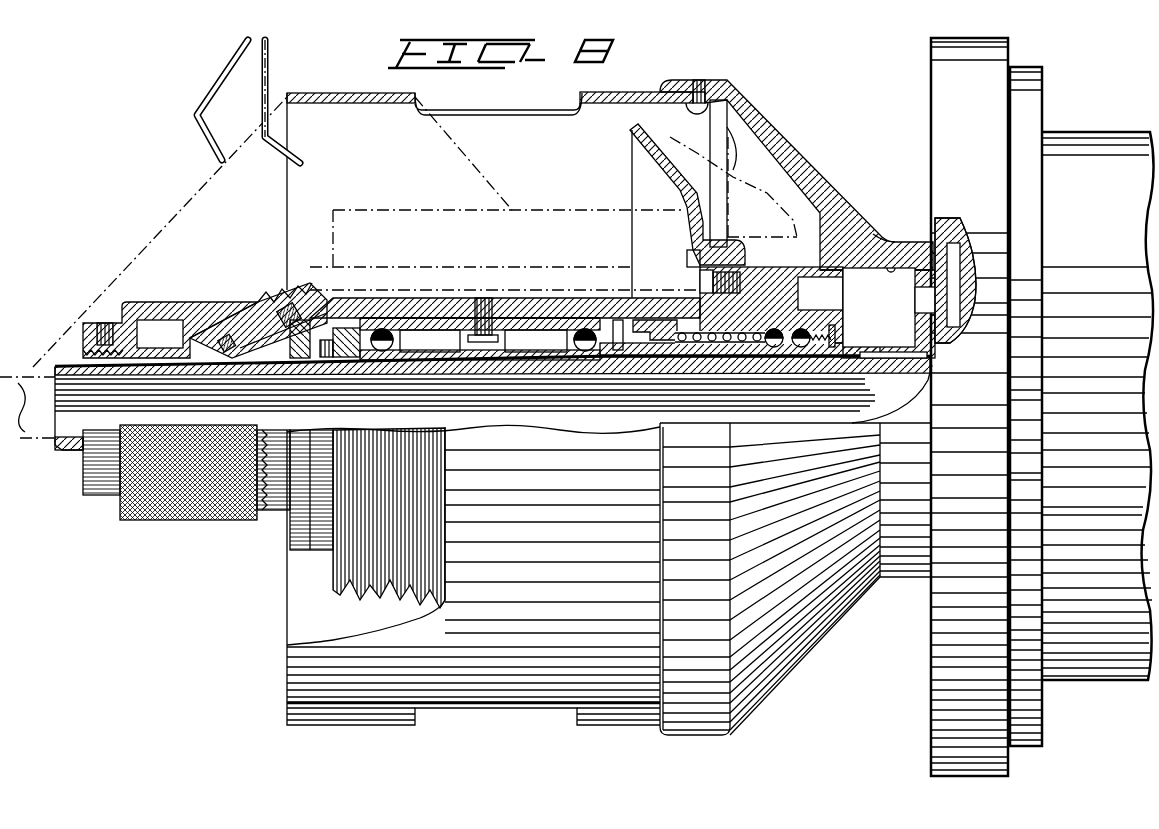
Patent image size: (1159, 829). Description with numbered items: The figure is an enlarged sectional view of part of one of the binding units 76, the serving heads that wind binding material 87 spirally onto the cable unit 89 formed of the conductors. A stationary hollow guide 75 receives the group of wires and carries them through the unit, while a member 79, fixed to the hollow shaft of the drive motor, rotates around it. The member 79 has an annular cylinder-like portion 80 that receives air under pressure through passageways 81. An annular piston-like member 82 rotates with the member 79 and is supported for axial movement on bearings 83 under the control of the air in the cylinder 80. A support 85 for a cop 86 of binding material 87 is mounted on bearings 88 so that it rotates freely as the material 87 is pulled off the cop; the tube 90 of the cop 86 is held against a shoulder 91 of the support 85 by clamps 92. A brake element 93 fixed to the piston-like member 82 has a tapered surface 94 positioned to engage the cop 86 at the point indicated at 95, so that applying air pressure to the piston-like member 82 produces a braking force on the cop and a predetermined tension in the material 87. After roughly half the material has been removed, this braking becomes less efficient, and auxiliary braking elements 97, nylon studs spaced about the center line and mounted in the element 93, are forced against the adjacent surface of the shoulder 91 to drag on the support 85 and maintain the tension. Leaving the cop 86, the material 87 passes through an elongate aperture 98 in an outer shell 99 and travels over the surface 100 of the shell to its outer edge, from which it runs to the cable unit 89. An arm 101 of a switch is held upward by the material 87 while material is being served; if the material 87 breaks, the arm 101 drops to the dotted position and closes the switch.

The stationary hollow guide 75 is at (840, 367).
The binding unit 76 is at (840, 173).
The member 79 is at (857, 227).
The annular cylinder-like portion 80 is at (953, 290).
The passageway 81 is at (953, 303).
The annular piston-like member 82 is at (780, 272).
The bearing 83 is at (820, 293).
The support 85 is at (395, 300).
The cop 86 is at (372, 215).
The binding material 87 is at (133, 255).
The bearing 88 is at (536, 339).
The cable unit 89 is at (155, 332).
The tube 90 is at (318, 266).
The shoulder 91 is at (690, 262).
The clamp 92 is at (277, 297).
The brake element 93 is at (630, 130).
The tapered surface 94 is at (680, 182).
The point of engagement 95 is at (680, 137).
The auxiliary braking element 97 is at (700, 283).
The elongate aperture 98 is at (528, 116).
The outer shell 99 is at (620, 95).
The surface 100 is at (340, 93).
The arm 101 is at (205, 133).